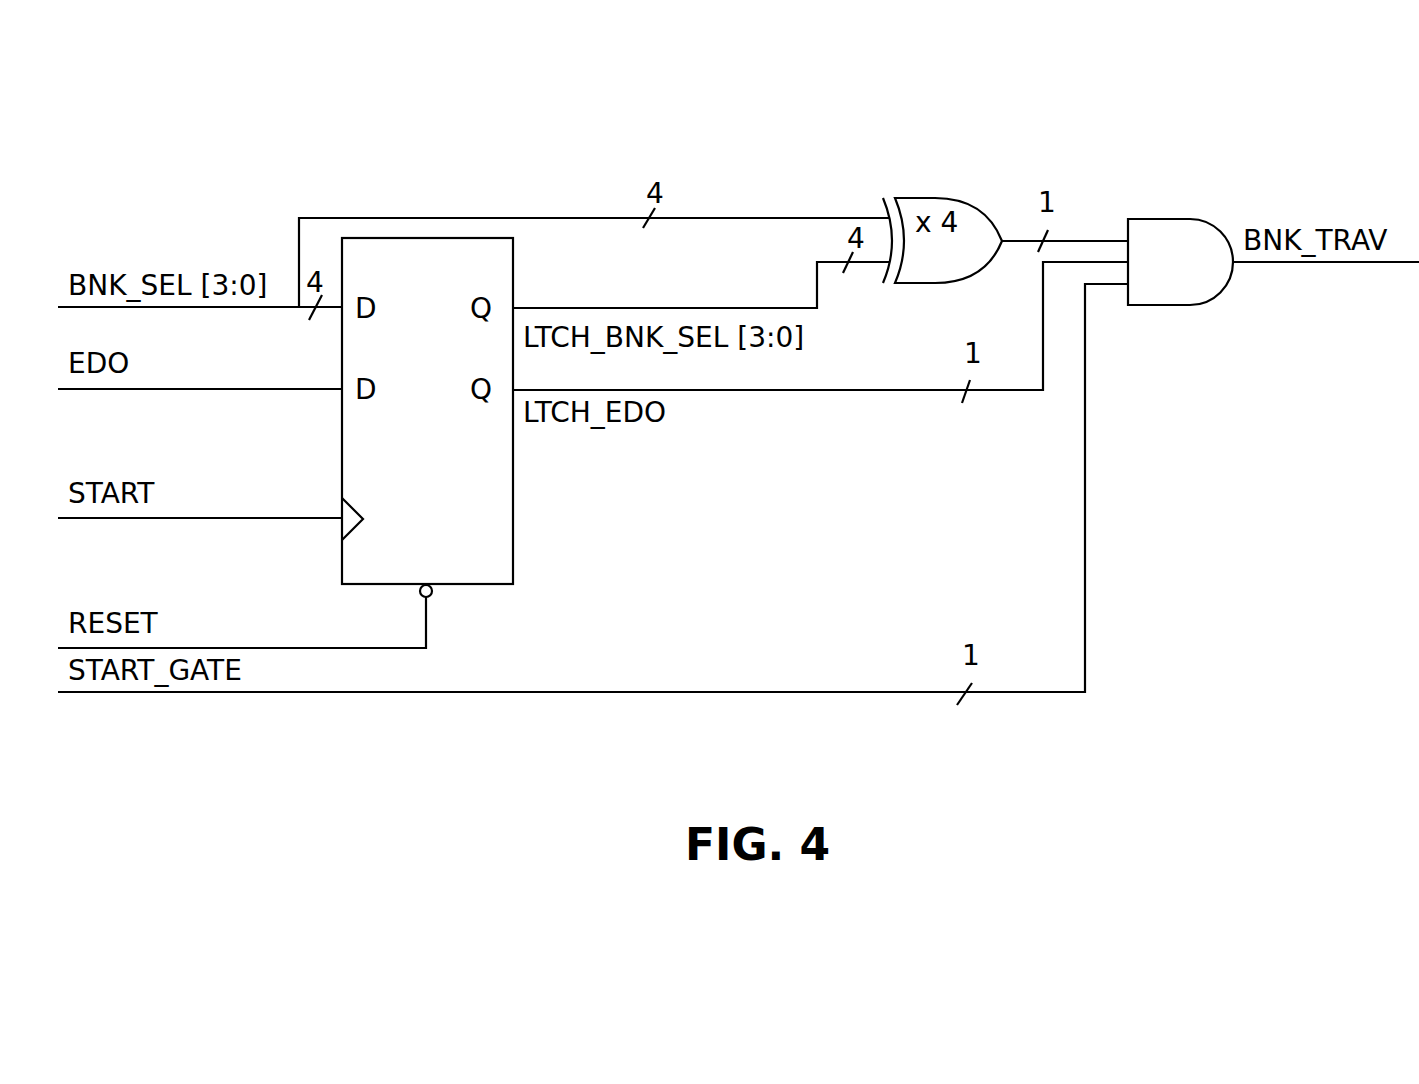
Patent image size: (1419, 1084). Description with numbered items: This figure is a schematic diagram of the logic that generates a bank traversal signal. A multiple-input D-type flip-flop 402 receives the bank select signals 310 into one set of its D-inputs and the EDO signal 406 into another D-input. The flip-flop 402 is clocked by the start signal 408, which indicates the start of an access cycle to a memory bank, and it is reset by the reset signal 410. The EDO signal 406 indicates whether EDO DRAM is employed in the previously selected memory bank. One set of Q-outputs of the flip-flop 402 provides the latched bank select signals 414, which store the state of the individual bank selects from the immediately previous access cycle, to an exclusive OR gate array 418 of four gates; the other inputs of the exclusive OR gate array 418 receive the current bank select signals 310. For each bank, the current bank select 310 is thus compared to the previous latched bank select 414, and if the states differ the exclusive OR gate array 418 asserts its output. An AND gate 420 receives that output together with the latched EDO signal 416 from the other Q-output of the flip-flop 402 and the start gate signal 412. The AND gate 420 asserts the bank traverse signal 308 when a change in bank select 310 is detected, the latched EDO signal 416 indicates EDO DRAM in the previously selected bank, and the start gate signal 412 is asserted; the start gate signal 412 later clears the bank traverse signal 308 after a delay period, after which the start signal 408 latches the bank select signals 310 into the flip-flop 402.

The bank traverse signal 308 is at (1285, 262).
The bank select signals 310 is at (278, 305).
The multiple-input D-type flip-flop 402 is at (427, 411).
The EDO signal 406 is at (278, 387).
The start signal 408 is at (278, 517).
The reset signal 410 is at (278, 647).
The start gate signal 412 is at (277, 693).
The latched bank select signals 414 is at (817, 298).
The latched EDO signal 416 is at (817, 392).
The exclusive OR gate array 418 is at (1005, 240).
The AND gate 420 is at (1180, 262).